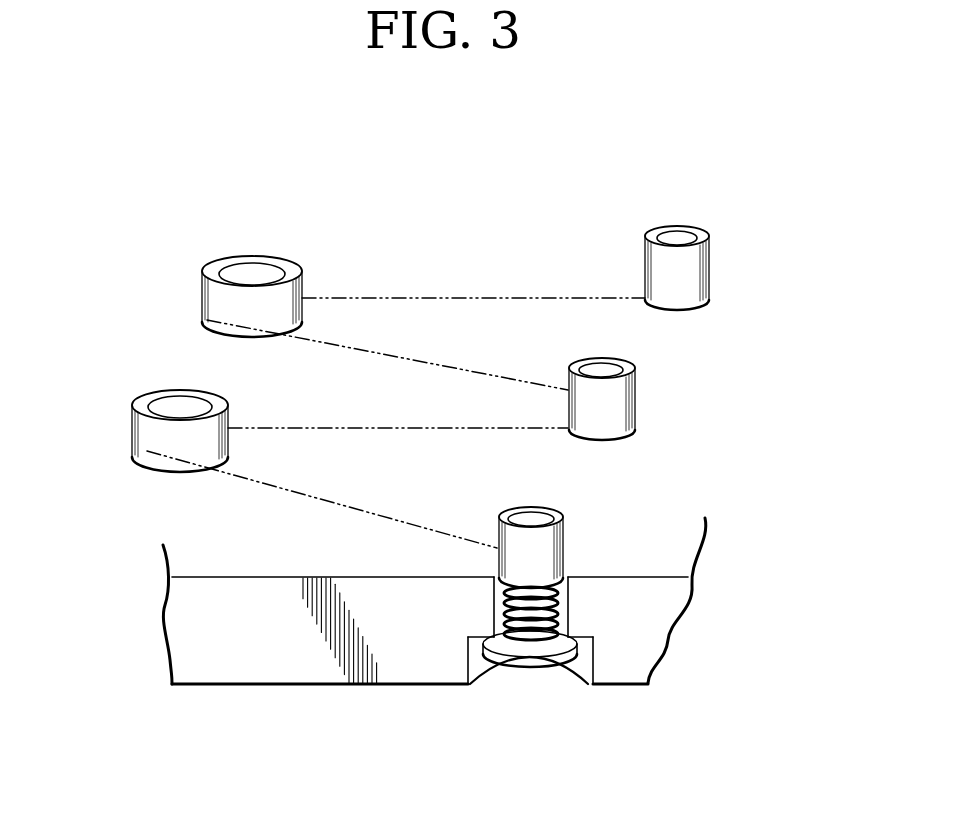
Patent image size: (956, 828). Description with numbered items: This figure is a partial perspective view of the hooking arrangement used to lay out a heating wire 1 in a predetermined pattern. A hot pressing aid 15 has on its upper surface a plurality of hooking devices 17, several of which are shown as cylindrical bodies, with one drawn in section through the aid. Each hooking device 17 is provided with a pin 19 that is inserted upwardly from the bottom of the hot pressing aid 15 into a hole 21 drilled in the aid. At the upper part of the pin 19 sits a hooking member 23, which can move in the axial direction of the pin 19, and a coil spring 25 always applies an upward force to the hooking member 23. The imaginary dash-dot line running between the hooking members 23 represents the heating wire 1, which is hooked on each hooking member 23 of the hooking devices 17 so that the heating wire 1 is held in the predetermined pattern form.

The heating wire 1 is at (275, 490).
The hot pressing aid 15 is at (248, 672).
The hooking device 17 is at (260, 252).
The pin 19 is at (526, 652).
The hole 21 is at (572, 668).
The hooking member 23 is at (225, 258).
The coil spring 25 is at (562, 598).